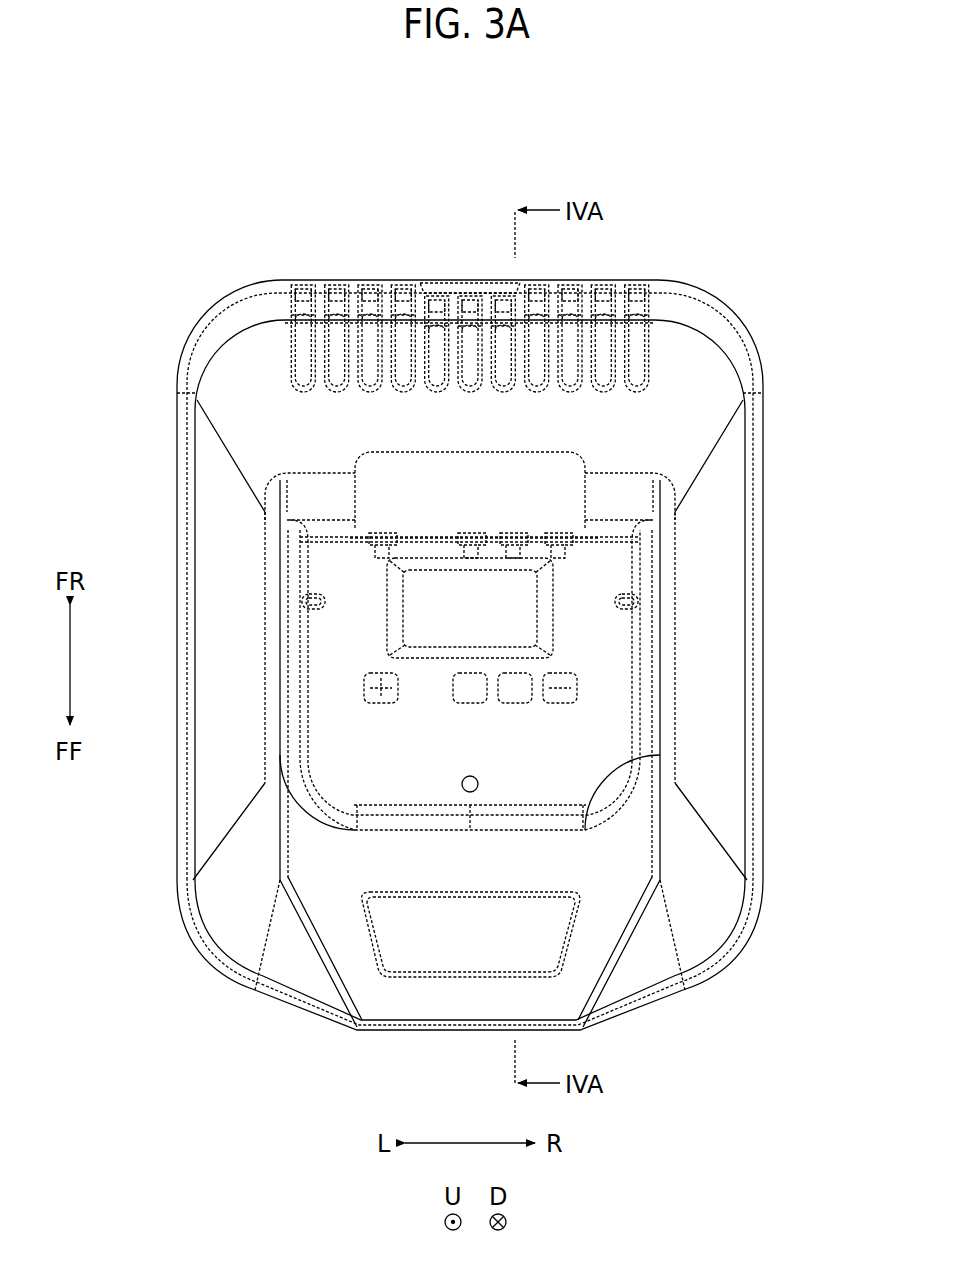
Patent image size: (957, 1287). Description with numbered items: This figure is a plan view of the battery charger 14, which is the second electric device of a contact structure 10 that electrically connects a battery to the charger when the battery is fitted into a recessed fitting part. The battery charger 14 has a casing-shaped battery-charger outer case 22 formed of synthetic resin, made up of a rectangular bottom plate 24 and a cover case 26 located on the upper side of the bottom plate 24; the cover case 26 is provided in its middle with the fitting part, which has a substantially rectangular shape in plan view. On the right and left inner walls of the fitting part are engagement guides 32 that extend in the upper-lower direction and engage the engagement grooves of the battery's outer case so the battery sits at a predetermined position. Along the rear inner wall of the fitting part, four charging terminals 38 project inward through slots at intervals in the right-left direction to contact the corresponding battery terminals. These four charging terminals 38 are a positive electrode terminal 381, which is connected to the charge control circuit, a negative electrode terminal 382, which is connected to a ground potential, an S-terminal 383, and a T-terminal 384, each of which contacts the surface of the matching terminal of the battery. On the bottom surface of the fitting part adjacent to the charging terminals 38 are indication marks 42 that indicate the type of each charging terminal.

The contact structure 10 is at (599, 505).
The battery charger 14 is at (377, 256).
The battery-charger outer case 22 is at (527, 659).
The bottom plate 24 is at (725, 893).
The cover case 26 is at (822, 915).
The engagement guide 32 is at (305, 610).
The charging terminal 38 is at (494, 485).
The positive electrode terminal 381 is at (385, 533).
The negative electrode terminal 382 is at (559, 533).
The S-terminal 383 is at (472, 533).
The T-terminal 384 is at (513, 533).
The indication mark 42 is at (383, 704).